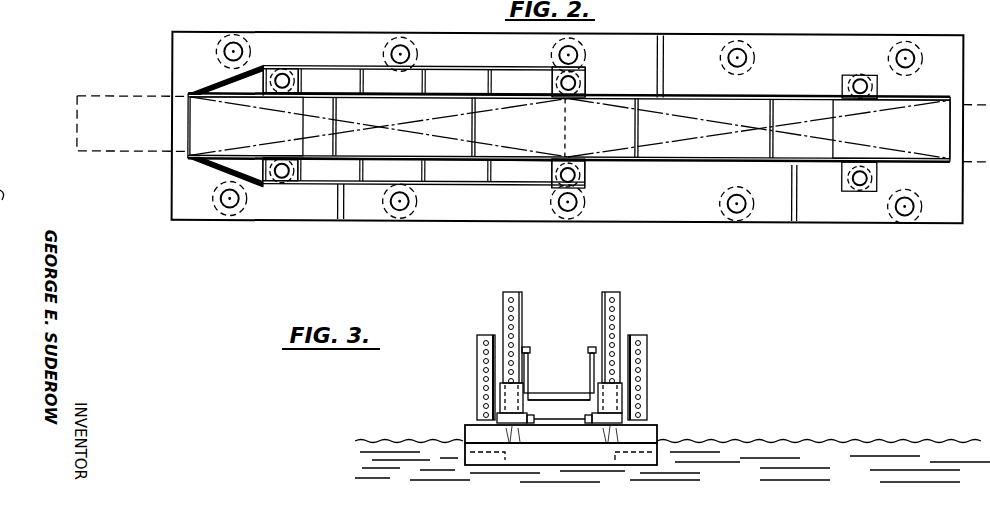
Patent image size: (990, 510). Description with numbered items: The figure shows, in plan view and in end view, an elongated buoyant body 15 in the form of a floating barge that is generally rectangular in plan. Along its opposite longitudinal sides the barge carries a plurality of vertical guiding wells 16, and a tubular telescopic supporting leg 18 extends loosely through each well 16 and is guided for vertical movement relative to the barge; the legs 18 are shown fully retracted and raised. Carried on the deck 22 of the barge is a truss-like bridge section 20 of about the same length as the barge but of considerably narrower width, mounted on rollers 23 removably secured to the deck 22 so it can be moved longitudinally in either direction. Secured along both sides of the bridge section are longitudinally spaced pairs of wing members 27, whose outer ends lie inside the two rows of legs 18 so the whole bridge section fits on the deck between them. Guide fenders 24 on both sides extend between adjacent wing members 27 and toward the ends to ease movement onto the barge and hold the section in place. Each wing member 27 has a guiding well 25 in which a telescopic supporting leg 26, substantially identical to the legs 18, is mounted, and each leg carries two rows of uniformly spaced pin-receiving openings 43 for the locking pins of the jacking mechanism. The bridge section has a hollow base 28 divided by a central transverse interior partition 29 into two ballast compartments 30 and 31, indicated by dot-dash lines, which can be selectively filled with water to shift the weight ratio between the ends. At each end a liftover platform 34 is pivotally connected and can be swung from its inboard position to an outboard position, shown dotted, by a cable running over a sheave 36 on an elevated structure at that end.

In FIG. 2, the buoyant body 15 is at (738, 45).
In FIG. 3, the buoyant body 15 is at (580, 455).
In FIG. 2, the guiding well 16 is at (906, 210).
In FIG. 2, the supporting leg 18 is at (236, 48).
In FIG. 3, the supporting leg 18 is at (492, 333).
In FIG. 2, the bridge section 20 is at (648, 96).
In FIG. 3, the bridge section 20 is at (548, 405).
In FIG. 2, the deck 22 is at (812, 48).
In FIG. 3, the rollers 23 is at (490, 420).
In FIG. 2, the guide fenders 24 is at (222, 84).
In FIG. 2, the guiding well 25 is at (286, 78).
In FIG. 2, the supporting leg 26 is at (282, 72).
In FIG. 3, the supporting leg 26 is at (602, 310).
In FIG. 2, the wing member 27 is at (588, 88).
In FIG. 3, the wing member 27 is at (624, 395).
In FIG. 2, the hollow base 28 is at (732, 117).
In FIG. 2, the interior partition 29 is at (570, 138).
In FIG. 2, the ballast compartment 30 is at (462, 135).
In FIG. 2, the ballast compartment 31 is at (723, 148).
In FIG. 2, the liftover platform 34 is at (118, 97).
In FIG. 3, the liftover platform 34 is at (575, 393).
In FIG. 3, the sheave 36 is at (528, 350).
In FIG. 3, the pin-receiving openings 43 is at (486, 362).